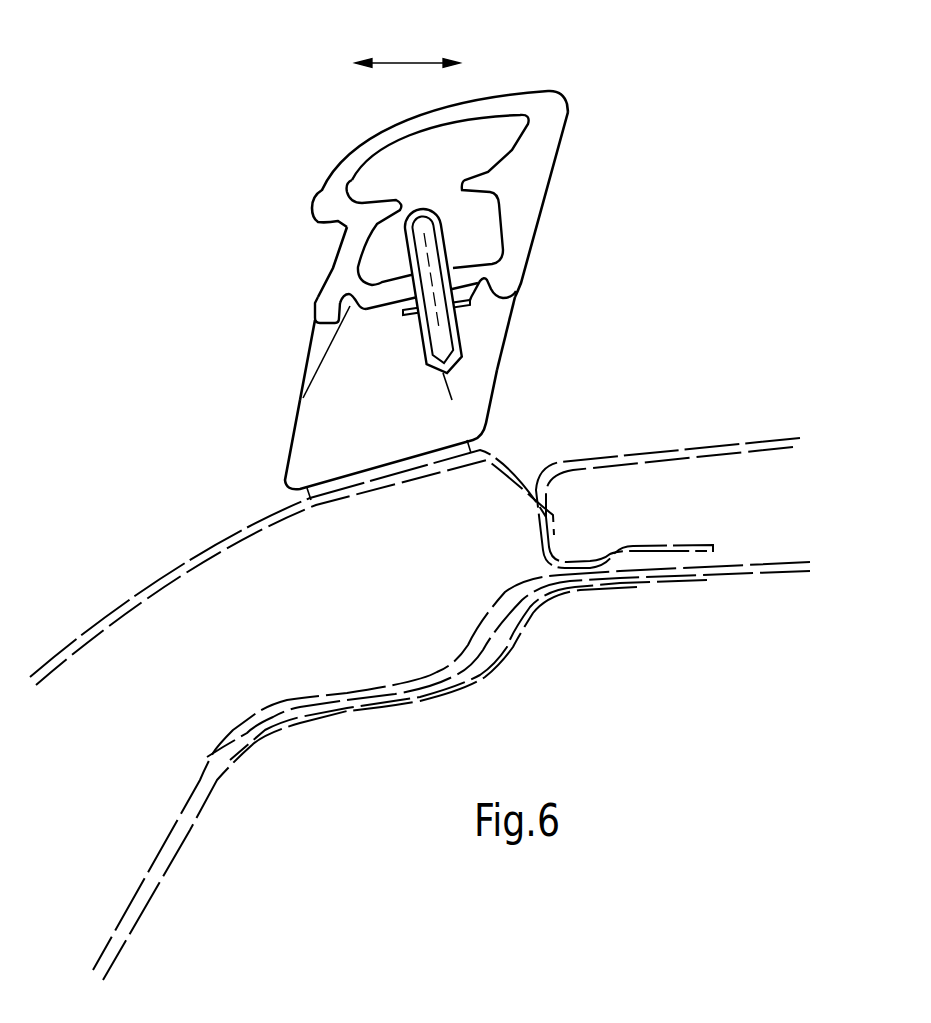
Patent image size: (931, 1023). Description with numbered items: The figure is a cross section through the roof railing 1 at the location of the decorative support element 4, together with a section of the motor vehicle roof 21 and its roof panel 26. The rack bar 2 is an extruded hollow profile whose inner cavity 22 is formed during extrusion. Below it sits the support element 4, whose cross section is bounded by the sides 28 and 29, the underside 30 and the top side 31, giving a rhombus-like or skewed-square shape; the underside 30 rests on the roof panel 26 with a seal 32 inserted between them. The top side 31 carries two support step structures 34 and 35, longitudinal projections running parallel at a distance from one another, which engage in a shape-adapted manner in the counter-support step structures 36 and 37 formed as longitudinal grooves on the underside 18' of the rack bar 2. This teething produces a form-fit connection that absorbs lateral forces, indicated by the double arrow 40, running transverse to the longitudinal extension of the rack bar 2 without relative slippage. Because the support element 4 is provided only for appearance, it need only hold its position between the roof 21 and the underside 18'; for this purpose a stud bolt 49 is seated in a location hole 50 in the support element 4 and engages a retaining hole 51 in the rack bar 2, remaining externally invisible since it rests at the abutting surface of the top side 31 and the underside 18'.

The roof railing 1 is at (193, 389).
The rack bar 2 is at (556, 176).
The support element 4 is at (508, 354).
The underside of the rack bar 18' is at (408, 351).
The motor vehicle roof 21 is at (178, 552).
The inner cavity 22 is at (424, 226).
The roof panel 26 is at (231, 540).
The side of the support element 28 is at (292, 410).
The side of the support element 29 is at (497, 383).
The underside of the support element 30 is at (349, 470).
The top side of the support element 31 is at (346, 297).
The seal 32 is at (407, 460).
The support step structure 34 is at (340, 322).
The support step structure 35 is at (504, 300).
The counter-support step structure 36 is at (372, 284).
The counter-support step structure 37 is at (507, 268).
The double arrow 40 is at (417, 64).
The stud bolt 49 is at (443, 250).
The location hole 50 is at (417, 340).
The retaining hole 51 is at (395, 290).